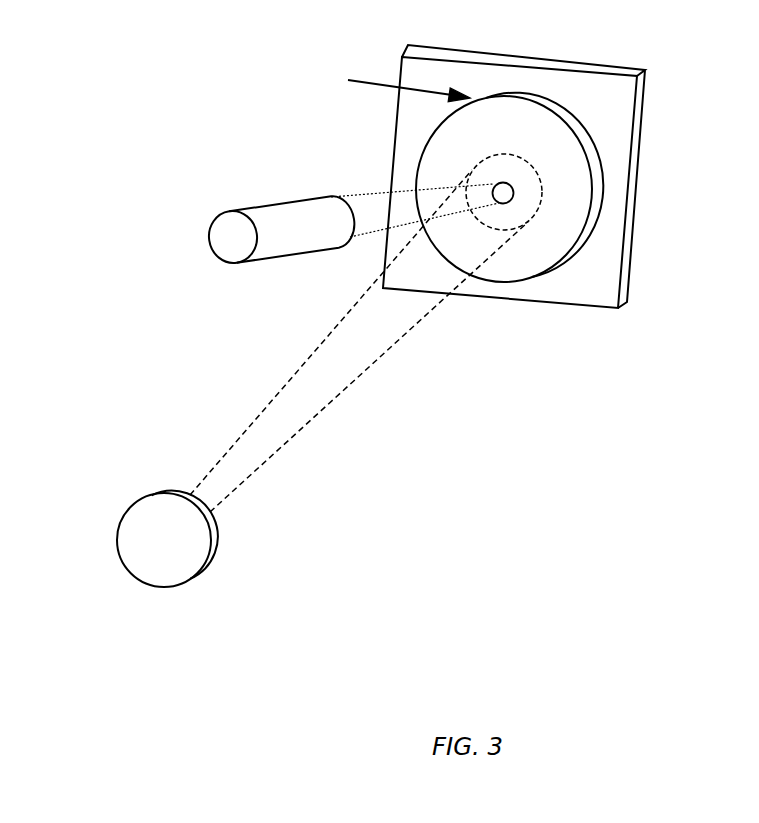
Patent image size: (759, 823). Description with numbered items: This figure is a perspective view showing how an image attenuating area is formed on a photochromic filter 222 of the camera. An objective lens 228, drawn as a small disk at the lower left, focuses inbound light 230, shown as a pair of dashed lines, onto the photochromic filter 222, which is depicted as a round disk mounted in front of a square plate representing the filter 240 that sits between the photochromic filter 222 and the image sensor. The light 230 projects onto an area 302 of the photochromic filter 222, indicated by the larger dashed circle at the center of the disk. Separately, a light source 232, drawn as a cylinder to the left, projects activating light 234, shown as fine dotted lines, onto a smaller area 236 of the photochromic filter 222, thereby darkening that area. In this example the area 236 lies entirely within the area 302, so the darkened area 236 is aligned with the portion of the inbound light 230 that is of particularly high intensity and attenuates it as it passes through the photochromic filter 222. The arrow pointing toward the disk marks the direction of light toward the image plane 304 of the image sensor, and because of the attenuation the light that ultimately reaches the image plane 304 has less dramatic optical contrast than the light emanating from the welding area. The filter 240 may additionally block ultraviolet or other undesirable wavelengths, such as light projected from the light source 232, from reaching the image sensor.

The filter 240 is at (583, 60).
The photochromic filter 222 is at (583, 148).
The area 302 is at (488, 157).
The area 236 is at (513, 193).
The image plane 304 is at (383, 82).
The light source 232 is at (280, 220).
The activating light 234 is at (375, 197).
The light 230 is at (292, 383).
The objective lens 228 is at (128, 522).